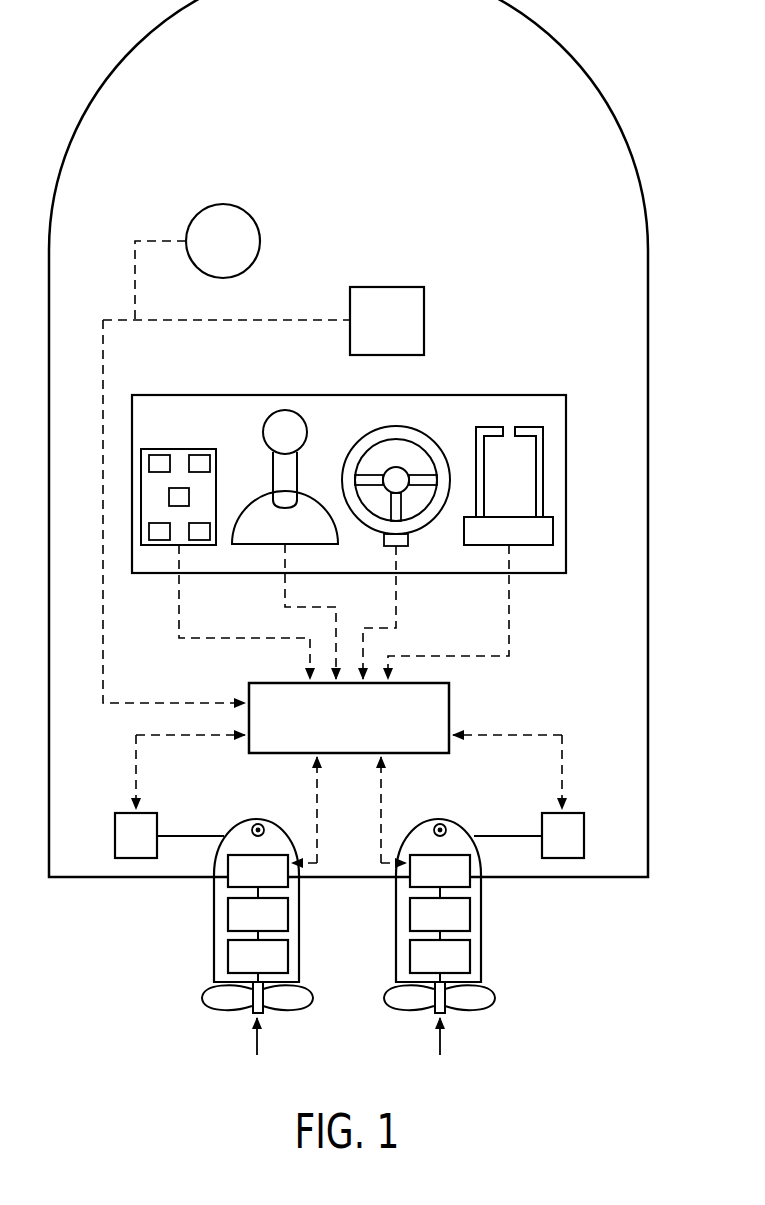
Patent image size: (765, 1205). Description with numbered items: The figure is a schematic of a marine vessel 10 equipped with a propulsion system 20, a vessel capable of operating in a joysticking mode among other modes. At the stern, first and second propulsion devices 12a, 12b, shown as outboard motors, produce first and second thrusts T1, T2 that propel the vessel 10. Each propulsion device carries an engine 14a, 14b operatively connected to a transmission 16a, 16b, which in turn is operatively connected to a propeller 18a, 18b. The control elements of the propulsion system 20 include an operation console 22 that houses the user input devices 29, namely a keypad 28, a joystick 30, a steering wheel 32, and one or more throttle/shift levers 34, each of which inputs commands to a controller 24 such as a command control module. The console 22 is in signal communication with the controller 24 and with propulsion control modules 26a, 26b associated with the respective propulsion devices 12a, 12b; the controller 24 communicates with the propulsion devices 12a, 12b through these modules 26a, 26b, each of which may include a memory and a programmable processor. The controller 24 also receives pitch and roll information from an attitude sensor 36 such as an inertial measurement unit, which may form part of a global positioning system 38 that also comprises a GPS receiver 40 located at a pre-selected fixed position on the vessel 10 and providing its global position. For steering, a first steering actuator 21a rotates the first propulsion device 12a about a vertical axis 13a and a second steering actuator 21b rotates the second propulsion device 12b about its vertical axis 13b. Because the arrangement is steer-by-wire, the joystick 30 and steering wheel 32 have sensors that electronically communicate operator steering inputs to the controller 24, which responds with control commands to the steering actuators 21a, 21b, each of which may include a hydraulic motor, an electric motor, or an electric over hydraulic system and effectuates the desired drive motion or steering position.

The marine vessel 10 is at (628, 145).
The propulsion system 20 is at (531, 80).
The GPS receiver 40 is at (202, 212).
The global positioning system 38 is at (315, 275).
The attitude sensor 36 is at (387, 287).
The operator input devices 29 is at (244, 452).
The operation console 22 is at (511, 395).
The keypad 28 is at (158, 449).
The joystick 30 is at (298, 477).
The steering wheel 32 is at (396, 426).
The throttle/shift lever 34 is at (489, 427).
The controller 24 is at (449, 709).
The first steering actuator 21a is at (115, 836).
The second steering actuator 21b is at (584, 836).
The first propulsion device 12a is at (243, 885).
The second propulsion device 12b is at (446, 899).
The vertical axis 13a is at (253, 825).
The vertical axis 13b is at (445, 825).
The engine 14a is at (228, 913).
The engine 14b is at (470, 913).
The transmission 16a is at (228, 956).
The transmission 16b is at (470, 956).
The propeller 18a is at (203, 998).
The propeller 18b is at (495, 998).
The propulsion control module 26a is at (288, 880).
The propulsion control module 26b is at (410, 883).
The first thrust T1 is at (257, 1042).
The second thrust T2 is at (440, 1042).